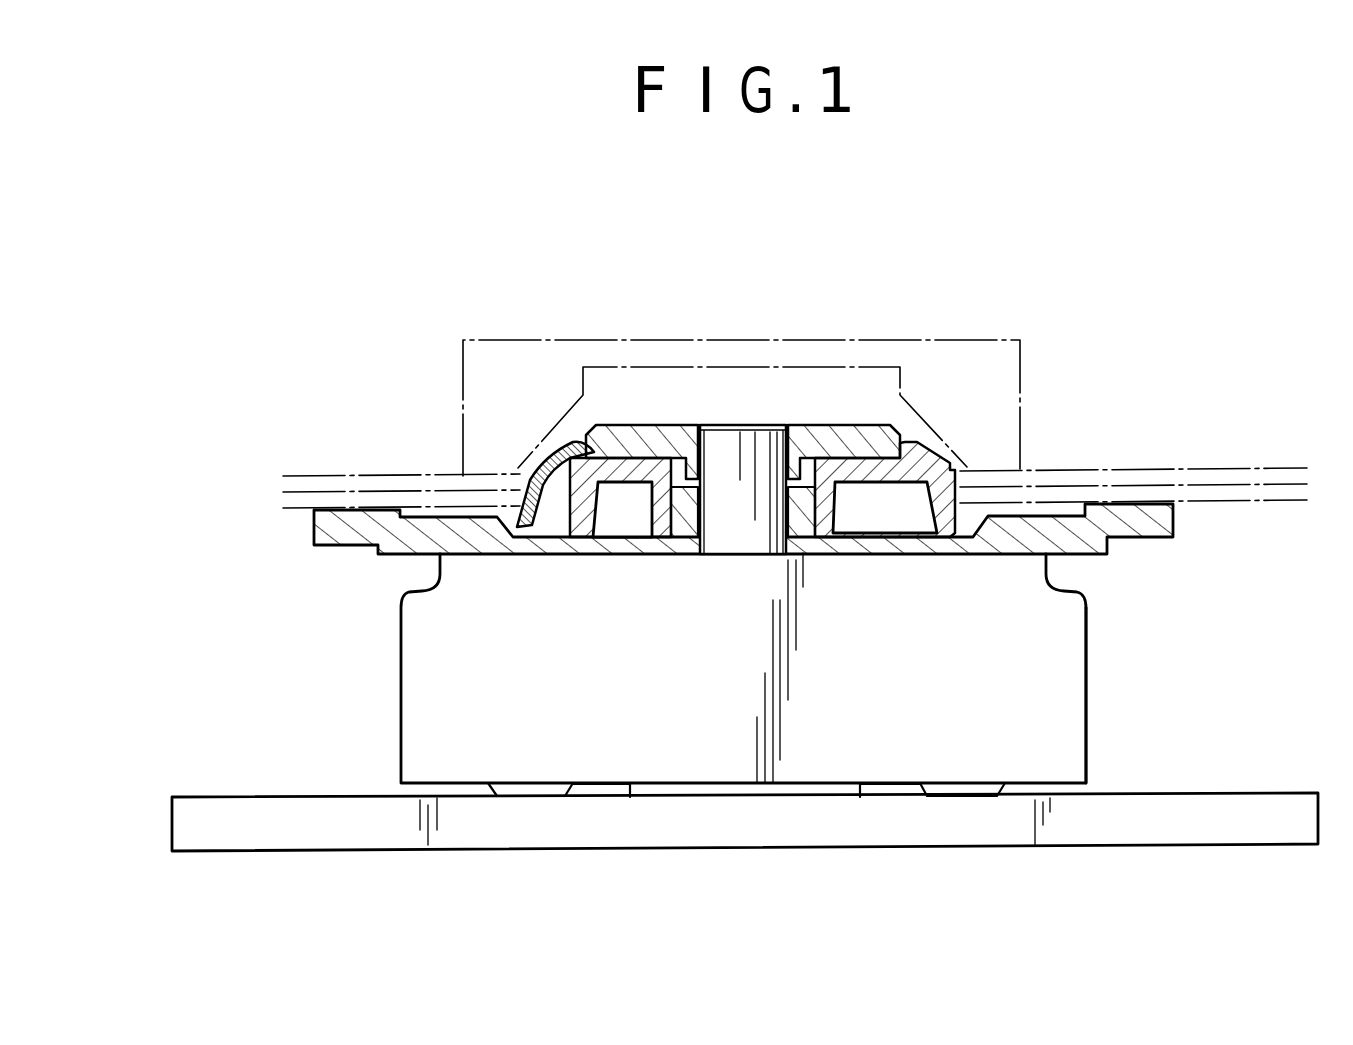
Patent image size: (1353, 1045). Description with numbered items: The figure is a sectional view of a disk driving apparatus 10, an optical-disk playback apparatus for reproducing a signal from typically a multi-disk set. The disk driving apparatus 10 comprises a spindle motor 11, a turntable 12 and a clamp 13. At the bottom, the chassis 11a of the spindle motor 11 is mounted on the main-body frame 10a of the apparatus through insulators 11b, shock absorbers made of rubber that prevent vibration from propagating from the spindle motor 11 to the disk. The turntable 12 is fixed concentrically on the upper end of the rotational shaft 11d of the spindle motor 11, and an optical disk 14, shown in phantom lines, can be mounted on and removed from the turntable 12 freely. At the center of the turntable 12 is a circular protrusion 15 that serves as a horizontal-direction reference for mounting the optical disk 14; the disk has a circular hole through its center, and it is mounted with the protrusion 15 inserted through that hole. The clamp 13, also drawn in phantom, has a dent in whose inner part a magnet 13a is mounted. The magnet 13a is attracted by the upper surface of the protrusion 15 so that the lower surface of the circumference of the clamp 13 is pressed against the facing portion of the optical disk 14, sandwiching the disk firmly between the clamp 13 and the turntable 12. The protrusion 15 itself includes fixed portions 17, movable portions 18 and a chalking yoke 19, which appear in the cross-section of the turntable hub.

The disk driving apparatus 10 is at (1128, 325).
The main-body frame 10a is at (1133, 820).
The spindle motor 11 is at (1094, 628).
The chassis 11a is at (1067, 699).
The insulators 11b is at (977, 781).
The rotational shaft 11d is at (761, 427).
The turntable 12 is at (1112, 513).
The clamp 13 is at (745, 338).
The magnet 13a is at (665, 372).
The optical disk 14 is at (1250, 472).
The circular protrusion 15 is at (935, 448).
The fixed portions 17 is at (950, 524).
The movable portions 18 is at (540, 463).
The chalking yoke 19 is at (589, 437).